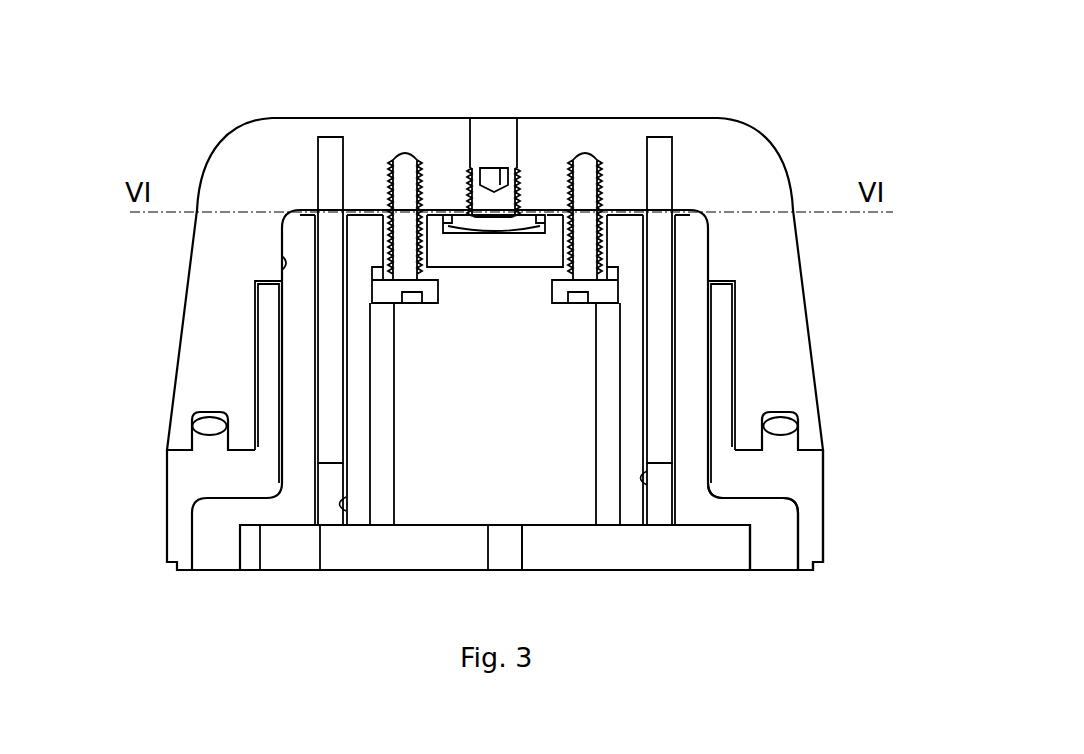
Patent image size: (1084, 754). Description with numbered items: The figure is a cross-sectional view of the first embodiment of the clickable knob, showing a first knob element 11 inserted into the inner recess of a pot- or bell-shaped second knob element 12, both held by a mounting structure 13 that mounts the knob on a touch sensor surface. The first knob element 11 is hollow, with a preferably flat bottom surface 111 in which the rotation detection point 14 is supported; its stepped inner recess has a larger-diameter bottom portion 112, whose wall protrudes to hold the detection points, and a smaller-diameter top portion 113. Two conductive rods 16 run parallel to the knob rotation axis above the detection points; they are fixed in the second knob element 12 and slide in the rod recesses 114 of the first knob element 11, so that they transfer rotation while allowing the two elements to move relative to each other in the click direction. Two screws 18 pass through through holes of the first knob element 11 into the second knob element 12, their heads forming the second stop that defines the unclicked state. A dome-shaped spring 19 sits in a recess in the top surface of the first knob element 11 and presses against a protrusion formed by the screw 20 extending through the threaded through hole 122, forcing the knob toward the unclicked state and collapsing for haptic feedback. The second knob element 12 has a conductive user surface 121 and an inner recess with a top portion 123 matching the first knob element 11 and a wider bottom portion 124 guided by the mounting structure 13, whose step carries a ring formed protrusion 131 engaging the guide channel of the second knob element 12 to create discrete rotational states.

The first knob element 11 is at (690, 357).
The second knob element 12 is at (770, 272).
The mounting structure 13 is at (808, 513).
The rotation detection point 14 is at (355, 573).
The rod 16 is at (332, 143).
The screw 18 is at (407, 168).
The dome-shaped spring 19 is at (522, 222).
The screw 20 is at (502, 177).
The bottom surface 111 is at (283, 573).
The bottom portion of the inner recess 112 is at (702, 552).
The top portion of the inner recess 113 is at (590, 488).
The rod recess 114 is at (343, 503).
The user surface 121 is at (715, 118).
The threaded through hole 122 is at (474, 162).
The top portion of the inner recess 123 is at (280, 260).
The bottom portion of the inner recess 124 is at (253, 375).
The ring formed protrusion 131 is at (780, 430).